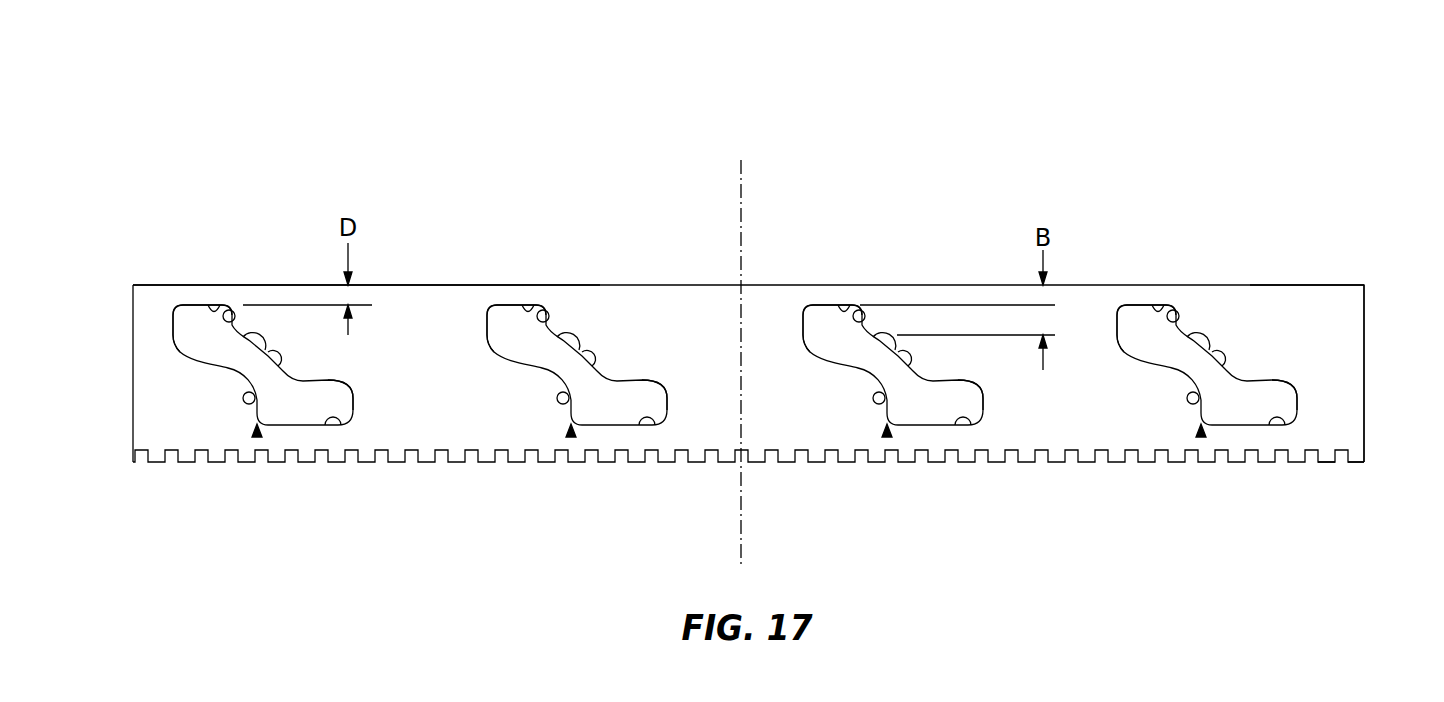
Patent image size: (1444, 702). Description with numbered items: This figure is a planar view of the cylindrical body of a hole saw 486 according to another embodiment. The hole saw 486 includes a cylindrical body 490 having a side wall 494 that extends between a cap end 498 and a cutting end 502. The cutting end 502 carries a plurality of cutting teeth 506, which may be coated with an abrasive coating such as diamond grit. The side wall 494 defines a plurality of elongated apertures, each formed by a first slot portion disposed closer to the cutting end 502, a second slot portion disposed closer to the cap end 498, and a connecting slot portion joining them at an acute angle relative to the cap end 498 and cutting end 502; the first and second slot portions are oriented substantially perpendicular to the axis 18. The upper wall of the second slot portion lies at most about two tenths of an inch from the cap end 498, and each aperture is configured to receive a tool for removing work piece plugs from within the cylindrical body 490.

The axis 18 is at (743, 220).
The hole saw 486 is at (1005, 140).
The cylindrical body 490 is at (1366, 300).
The side wall 494 is at (1352, 325).
The cap end 498 is at (1285, 285).
The cutting end 502 is at (1352, 463).
The cutting teeth 506 is at (1325, 463).